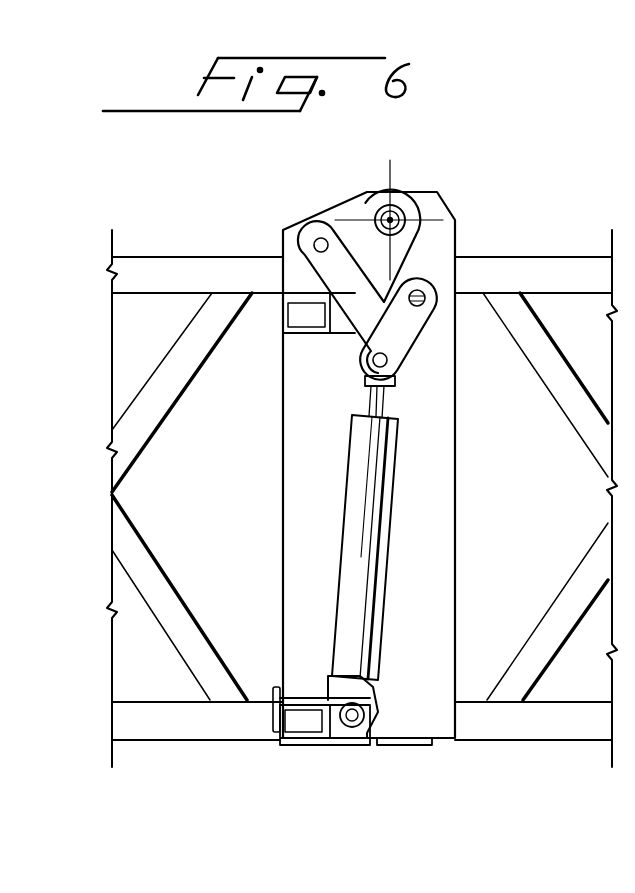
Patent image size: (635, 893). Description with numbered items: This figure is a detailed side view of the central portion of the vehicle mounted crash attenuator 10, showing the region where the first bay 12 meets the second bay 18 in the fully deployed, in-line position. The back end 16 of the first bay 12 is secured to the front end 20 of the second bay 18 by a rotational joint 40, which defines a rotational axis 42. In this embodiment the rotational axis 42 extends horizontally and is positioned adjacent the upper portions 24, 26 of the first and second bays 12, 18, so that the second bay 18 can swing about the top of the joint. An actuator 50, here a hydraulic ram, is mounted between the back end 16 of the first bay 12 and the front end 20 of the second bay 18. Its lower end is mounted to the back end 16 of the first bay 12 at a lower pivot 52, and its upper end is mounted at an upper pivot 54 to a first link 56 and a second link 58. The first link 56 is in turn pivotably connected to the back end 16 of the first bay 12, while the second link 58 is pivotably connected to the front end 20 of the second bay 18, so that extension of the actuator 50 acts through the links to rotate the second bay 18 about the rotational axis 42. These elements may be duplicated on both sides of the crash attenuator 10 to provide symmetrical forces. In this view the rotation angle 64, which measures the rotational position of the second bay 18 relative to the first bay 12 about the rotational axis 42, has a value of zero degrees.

The crash attenuator 10 is at (310, 824).
The first bay 12 is at (196, 770).
The back end 16 is at (257, 742).
The second bay 18 is at (562, 765).
The front end 20 is at (467, 742).
The upper portion 24 is at (170, 263).
The upper portion 26 is at (512, 256).
The rotational joint 40 is at (412, 196).
The rotational axis 42 is at (372, 191).
The actuator 50 is at (378, 594).
The lower pivot 52 is at (351, 744).
The upper pivot 54 is at (388, 360).
The first link 56 is at (331, 226).
The second link 58 is at (427, 307).
The rotation angle 64 is at (391, 246).